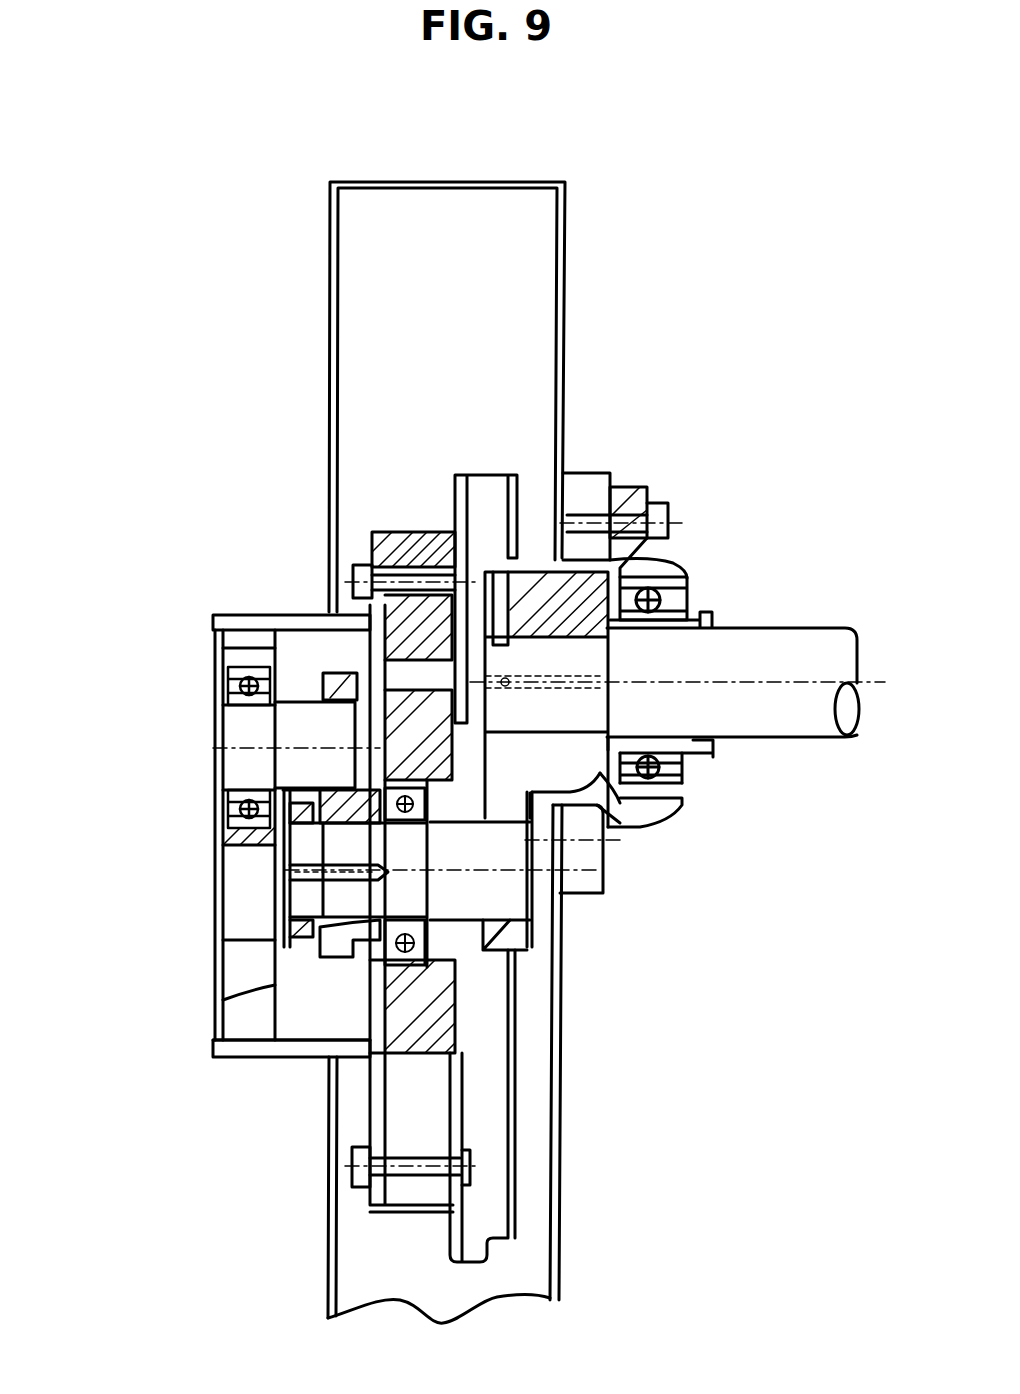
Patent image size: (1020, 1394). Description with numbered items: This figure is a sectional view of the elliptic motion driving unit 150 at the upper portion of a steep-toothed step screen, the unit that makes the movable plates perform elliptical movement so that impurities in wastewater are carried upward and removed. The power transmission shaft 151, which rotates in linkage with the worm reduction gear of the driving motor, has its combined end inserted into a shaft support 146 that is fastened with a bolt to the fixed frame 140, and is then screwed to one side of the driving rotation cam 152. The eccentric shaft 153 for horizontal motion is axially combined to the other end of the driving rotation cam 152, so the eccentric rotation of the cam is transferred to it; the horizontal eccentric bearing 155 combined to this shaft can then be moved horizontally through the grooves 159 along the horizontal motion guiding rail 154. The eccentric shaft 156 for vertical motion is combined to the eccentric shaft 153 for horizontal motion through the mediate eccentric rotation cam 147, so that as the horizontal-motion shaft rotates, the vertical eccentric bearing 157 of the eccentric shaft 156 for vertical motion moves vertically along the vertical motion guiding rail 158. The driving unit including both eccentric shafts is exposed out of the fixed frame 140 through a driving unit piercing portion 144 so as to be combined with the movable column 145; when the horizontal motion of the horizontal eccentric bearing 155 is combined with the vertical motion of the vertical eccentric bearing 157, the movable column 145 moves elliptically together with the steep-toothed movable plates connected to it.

The fixed frame 140 is at (557, 933).
The driving unit piercing portion 144 is at (455, 1138).
The movable column 145 is at (520, 1017).
The shaft support 146 is at (624, 483).
The mediate eccentric rotation cam 147 is at (328, 675).
The elliptic motion driving unit 150 is at (686, 479).
The power transmission shaft 151 is at (780, 640).
The driving rotation cam 152 is at (573, 762).
The eccentric shaft for horizontal motion 153 is at (290, 903).
The horizontal motion guiding rail 154 is at (336, 606).
The horizontal eccentric bearing 155 is at (198, 980).
The eccentric shaft for vertical motion 156 is at (215, 765).
The vertical eccentric bearing 157 is at (215, 673).
The vertical motion guiding rail 158 is at (222, 872).
The grooves 159 is at (275, 985).